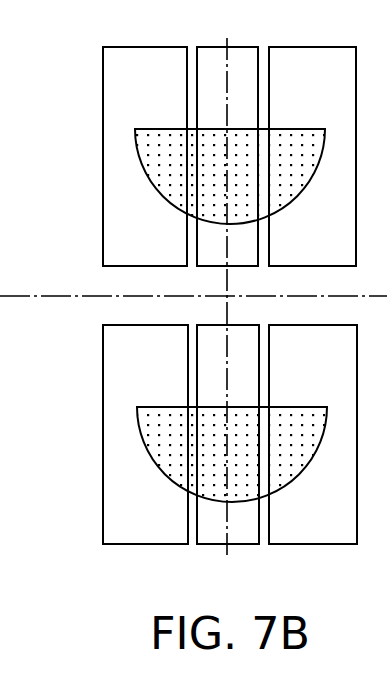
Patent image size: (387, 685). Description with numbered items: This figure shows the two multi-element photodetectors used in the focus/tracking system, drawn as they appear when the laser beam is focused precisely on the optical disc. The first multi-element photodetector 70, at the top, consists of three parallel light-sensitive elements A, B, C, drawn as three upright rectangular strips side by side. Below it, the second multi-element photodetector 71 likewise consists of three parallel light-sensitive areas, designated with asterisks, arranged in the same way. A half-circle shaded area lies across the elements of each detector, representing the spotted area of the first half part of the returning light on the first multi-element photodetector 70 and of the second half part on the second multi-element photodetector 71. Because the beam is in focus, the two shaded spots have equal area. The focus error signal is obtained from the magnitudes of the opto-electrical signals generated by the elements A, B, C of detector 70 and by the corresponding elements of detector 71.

The first multi-element photodetector 70 is at (64, 152).
The second multi-element photodetector 71 is at (64, 431).
The light-sensitive element A is at (145, 299).
The light-sensitive element B is at (228, 300).
The light-sensitive element C is at (313, 299).